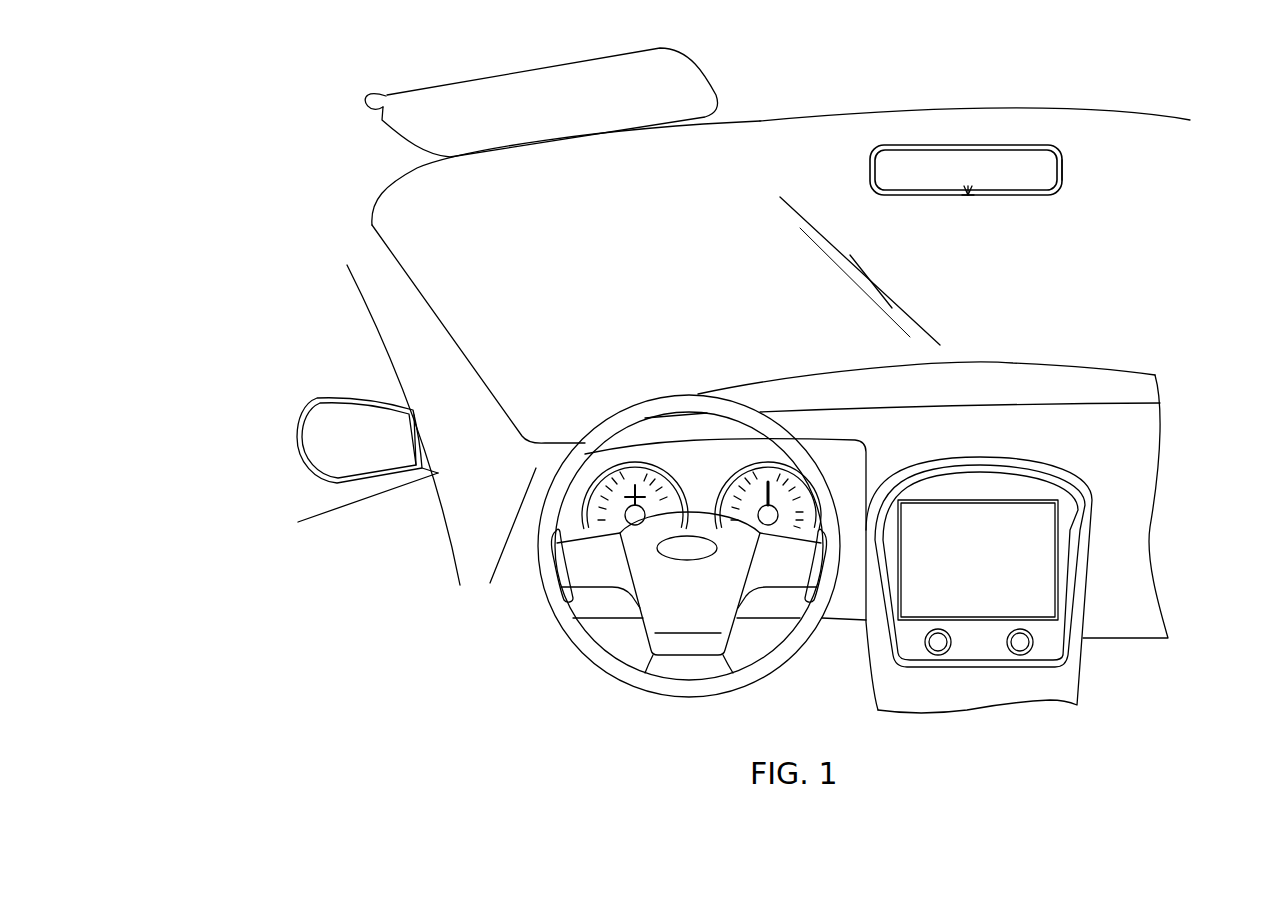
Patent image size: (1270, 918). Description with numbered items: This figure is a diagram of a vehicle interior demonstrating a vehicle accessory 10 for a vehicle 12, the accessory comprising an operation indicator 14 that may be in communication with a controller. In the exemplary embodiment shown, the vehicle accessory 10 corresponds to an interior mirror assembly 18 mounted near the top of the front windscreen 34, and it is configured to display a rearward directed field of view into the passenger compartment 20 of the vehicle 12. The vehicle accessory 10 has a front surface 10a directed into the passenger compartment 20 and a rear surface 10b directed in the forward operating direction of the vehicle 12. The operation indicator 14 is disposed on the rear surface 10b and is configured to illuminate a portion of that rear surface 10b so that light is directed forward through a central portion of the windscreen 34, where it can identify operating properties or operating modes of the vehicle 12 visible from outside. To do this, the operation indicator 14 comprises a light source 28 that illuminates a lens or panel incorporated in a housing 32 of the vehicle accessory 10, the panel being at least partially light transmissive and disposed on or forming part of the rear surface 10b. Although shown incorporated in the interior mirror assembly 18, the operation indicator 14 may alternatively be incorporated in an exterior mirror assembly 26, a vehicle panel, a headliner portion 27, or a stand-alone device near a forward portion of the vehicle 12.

The vehicle accessory 10 is at (970, 155).
The front surface 10a is at (925, 182).
The rear surface 10b is at (1040, 216).
The vehicle 12 is at (318, 157).
The operation indicator 14 is at (977, 197).
The interior mirror assembly 18 is at (1035, 172).
The passenger compartment 20 is at (1130, 343).
The exterior mirror assembly 26 is at (317, 398).
The headliner portion 27 is at (977, 82).
The light source 28 is at (967, 197).
The housing 32 is at (930, 145).
The front windscreen 34 is at (741, 299).